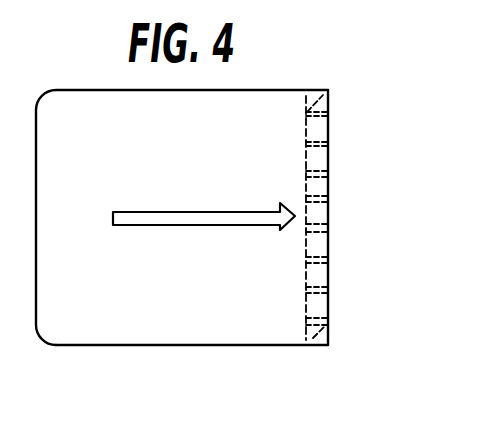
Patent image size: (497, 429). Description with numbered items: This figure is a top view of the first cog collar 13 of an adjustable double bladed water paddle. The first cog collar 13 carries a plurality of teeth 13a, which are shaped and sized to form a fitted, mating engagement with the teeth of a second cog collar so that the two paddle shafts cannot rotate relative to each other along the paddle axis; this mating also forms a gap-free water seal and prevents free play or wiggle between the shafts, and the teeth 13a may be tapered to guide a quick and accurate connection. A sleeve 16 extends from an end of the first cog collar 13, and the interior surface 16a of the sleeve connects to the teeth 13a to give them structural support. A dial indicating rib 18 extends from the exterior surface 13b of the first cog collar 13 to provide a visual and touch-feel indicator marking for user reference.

The first cog collar 13 is at (313, 71).
The teeth 13a is at (328, 145).
The exterior surface 13b is at (202, 345).
The sleeve 16 is at (328, 302).
The interior surface 16a is at (328, 273).
The dial indicating rib 18 is at (177, 225).